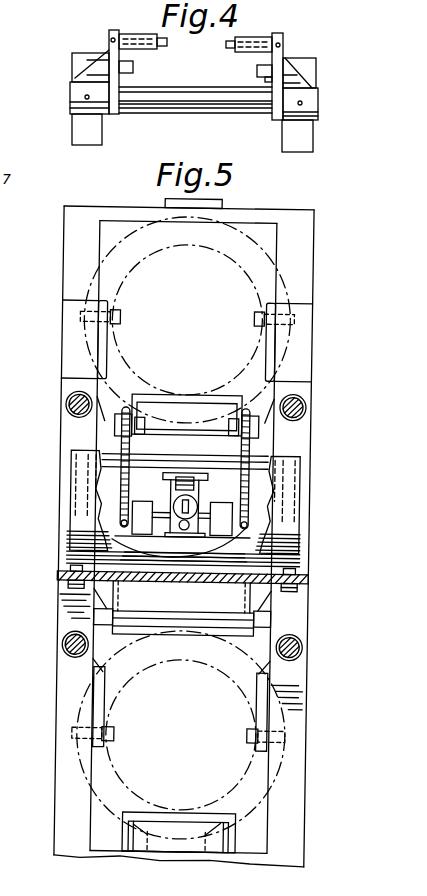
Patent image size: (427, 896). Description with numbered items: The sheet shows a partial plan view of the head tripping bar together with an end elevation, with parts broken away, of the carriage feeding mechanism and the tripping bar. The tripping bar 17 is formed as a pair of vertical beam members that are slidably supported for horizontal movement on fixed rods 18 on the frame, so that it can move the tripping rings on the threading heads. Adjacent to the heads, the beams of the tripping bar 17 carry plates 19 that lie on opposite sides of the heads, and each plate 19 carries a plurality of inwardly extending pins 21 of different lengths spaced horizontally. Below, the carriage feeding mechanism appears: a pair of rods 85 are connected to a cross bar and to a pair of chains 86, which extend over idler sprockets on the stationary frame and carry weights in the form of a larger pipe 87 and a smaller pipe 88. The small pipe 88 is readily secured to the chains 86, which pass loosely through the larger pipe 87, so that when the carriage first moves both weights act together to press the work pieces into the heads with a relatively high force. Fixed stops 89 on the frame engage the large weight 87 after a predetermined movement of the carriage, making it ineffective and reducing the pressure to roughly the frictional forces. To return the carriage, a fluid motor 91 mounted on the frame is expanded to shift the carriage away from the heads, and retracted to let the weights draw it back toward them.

In FIG. 4, the tripping bar 17 is at (80, 98).
In FIG. 5, the tripping bar 17 is at (72, 262).
In FIG. 5, the fixed rods 18 is at (68, 406).
In FIG. 4, the plates 19 is at (109, 50).
In FIG. 4, the pins 21 is at (168, 42).
In FIG. 5, the pins 21 is at (123, 319).
In FIG. 5, the rods 85 is at (122, 528).
In FIG. 5, the chains 86 is at (124, 442).
In FIG. 5, the pipe 87 is at (74, 472).
In FIG. 5, the pipe 88 is at (176, 630).
In FIG. 5, the fixed stops 89 is at (63, 575).
In FIG. 5, the fluid motor 91 is at (196, 506).